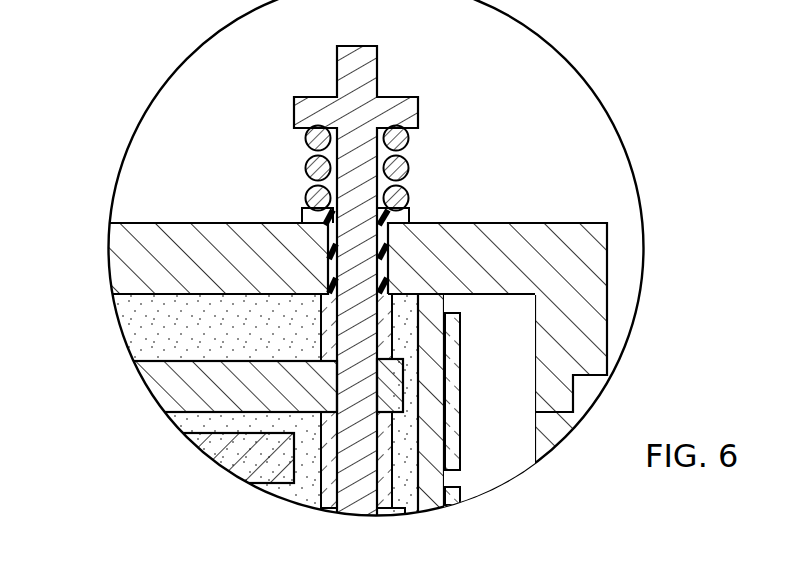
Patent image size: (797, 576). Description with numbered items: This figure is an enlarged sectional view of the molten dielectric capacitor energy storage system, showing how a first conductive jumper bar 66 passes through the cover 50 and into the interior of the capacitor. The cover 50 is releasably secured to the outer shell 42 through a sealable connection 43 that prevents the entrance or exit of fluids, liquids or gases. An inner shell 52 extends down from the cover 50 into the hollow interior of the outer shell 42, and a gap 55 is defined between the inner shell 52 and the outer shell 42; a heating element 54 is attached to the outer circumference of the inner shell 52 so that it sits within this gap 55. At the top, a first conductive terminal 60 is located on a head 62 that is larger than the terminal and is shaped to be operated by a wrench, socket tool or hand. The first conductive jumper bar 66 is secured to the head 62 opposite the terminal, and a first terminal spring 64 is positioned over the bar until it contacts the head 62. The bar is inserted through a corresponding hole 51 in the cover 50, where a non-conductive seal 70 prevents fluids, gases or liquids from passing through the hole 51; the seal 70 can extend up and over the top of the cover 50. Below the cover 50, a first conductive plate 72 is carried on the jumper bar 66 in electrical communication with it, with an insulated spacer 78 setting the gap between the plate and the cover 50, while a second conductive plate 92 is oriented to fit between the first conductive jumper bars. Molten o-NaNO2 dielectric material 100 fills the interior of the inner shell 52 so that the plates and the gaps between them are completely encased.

The outer shell 42 is at (572, 406).
The sealable connection 43 is at (537, 453).
The cover 50 is at (150, 222).
The hole 51 is at (303, 212).
The inner shell 52 is at (428, 505).
The heating element 54 is at (458, 440).
The gap 55 is at (488, 407).
The first conductive terminal 60 is at (357, 46).
The head 62 is at (403, 97).
The first terminal spring 64 is at (307, 173).
The first conductive jumper bar 66 is at (355, 514).
The seal 70 is at (413, 212).
The first conductive plate 72 is at (163, 387).
The insulated spacer 78 is at (318, 500).
The second conductive plate 92 is at (217, 450).
The molten o-NaNO2 dielectric material 100 is at (138, 332).